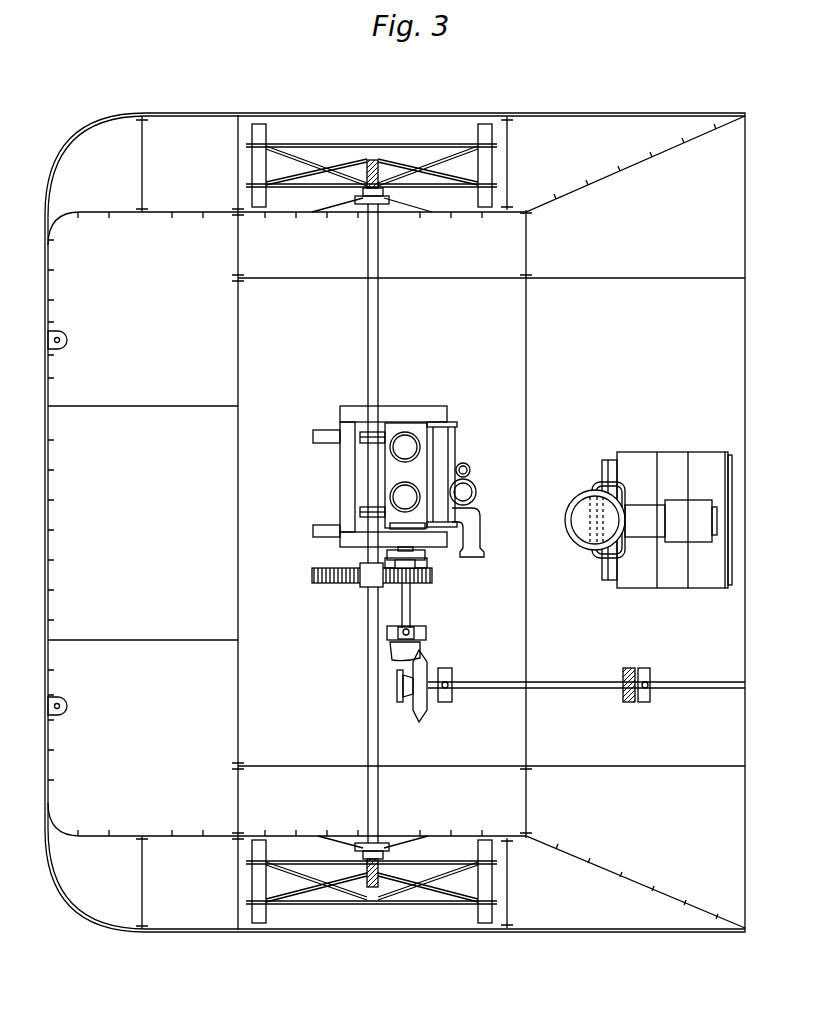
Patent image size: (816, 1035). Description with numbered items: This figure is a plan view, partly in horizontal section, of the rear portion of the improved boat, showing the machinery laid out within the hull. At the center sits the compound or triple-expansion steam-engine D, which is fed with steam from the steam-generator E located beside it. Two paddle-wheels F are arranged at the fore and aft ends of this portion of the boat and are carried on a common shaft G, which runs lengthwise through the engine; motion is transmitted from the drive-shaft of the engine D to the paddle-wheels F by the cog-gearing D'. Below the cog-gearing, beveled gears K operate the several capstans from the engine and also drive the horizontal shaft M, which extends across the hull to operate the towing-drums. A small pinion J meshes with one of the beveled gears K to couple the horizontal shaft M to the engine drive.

The paddle-wheel F is at (371, 523).
The shaft G is at (377, 523).
The compound or triple-expansion steam-engine D is at (398, 483).
The cog-gearing D' is at (372, 593).
The beveled gear K is at (419, 678).
The pinion J is at (395, 686).
The horizontal shaft M is at (586, 690).
The steam-generator E is at (648, 520).